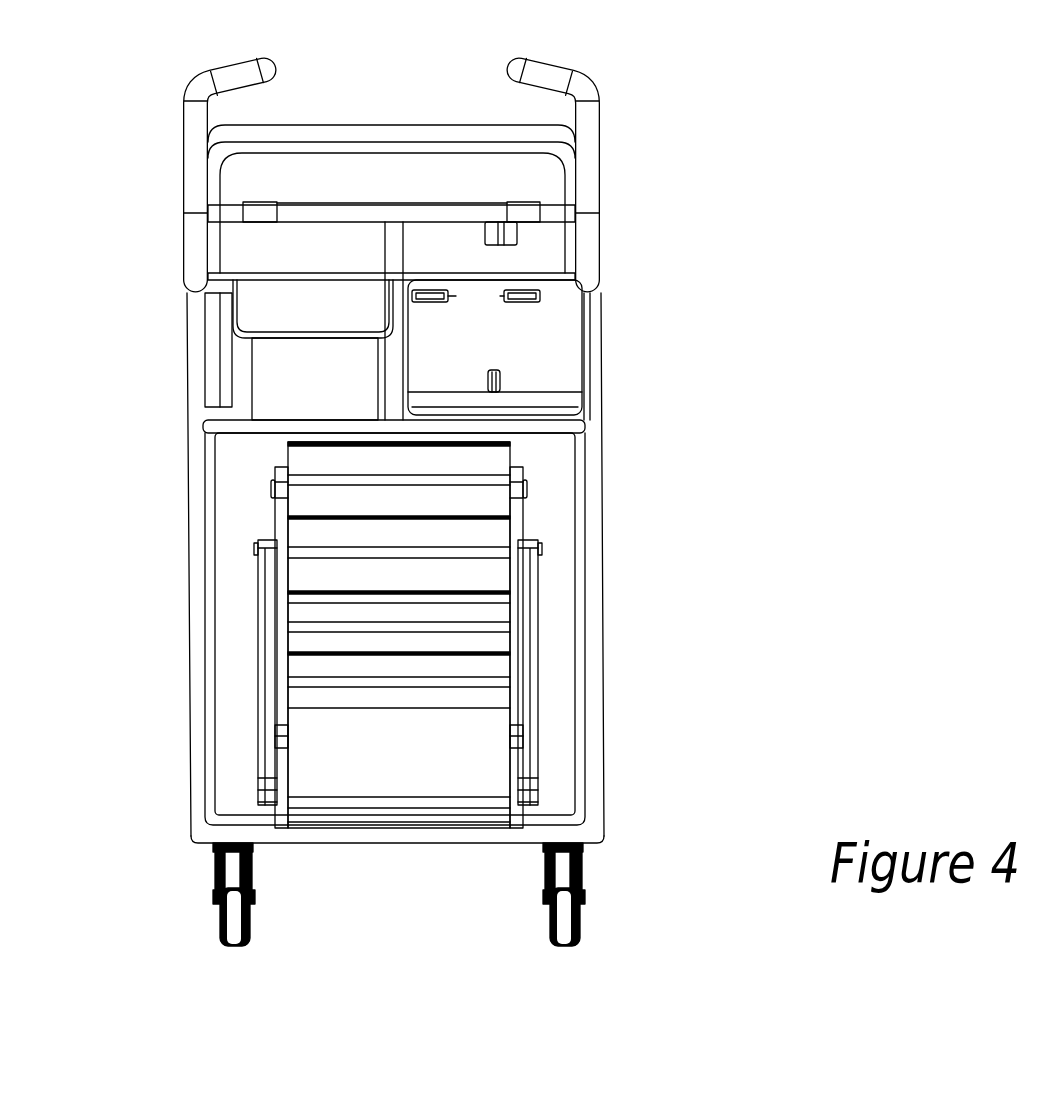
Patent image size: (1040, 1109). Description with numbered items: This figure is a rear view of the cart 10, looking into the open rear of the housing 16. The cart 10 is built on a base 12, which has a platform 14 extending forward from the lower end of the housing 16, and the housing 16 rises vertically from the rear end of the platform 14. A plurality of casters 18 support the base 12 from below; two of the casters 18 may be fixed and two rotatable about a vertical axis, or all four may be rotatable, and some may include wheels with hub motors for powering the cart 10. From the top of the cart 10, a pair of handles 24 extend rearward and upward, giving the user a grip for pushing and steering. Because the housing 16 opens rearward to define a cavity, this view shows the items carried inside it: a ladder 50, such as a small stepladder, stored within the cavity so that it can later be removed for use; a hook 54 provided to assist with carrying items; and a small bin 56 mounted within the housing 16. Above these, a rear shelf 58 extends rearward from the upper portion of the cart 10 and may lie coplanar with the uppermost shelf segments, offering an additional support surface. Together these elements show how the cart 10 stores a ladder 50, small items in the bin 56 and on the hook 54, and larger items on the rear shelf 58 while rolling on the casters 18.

The cart 10 is at (742, 111).
The base 12 is at (602, 442).
The platform 14 is at (603, 840).
The housing 16 is at (602, 627).
The casters 18 is at (252, 915).
The handles 24 is at (188, 182).
The ladder 50 is at (537, 573).
The hooks 54 is at (443, 297).
The small bin 56 is at (240, 380).
The rear shelf 58 is at (365, 197).